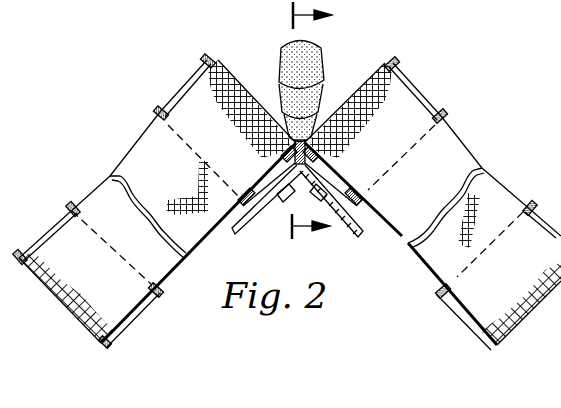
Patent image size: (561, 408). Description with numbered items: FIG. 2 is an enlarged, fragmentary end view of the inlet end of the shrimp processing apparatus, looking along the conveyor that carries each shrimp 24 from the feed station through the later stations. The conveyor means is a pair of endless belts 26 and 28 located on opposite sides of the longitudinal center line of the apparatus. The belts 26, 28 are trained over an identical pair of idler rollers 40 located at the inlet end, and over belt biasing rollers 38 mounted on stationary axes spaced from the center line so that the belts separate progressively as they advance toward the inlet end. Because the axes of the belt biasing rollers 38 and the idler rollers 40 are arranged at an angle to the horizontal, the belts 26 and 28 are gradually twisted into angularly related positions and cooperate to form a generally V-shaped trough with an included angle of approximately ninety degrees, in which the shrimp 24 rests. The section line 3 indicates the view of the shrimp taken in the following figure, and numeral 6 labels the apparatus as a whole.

The section line 3- 3 is at (290, 15).
The joint assembly 6 is at (359, 43).
The shrimp 24 is at (298, 51).
The endless belt 26 is at (158, 141).
The endless belt 28 is at (453, 158).
The belt biasing roller 38 is at (57, 213).
The idler roller 40 is at (197, 73).